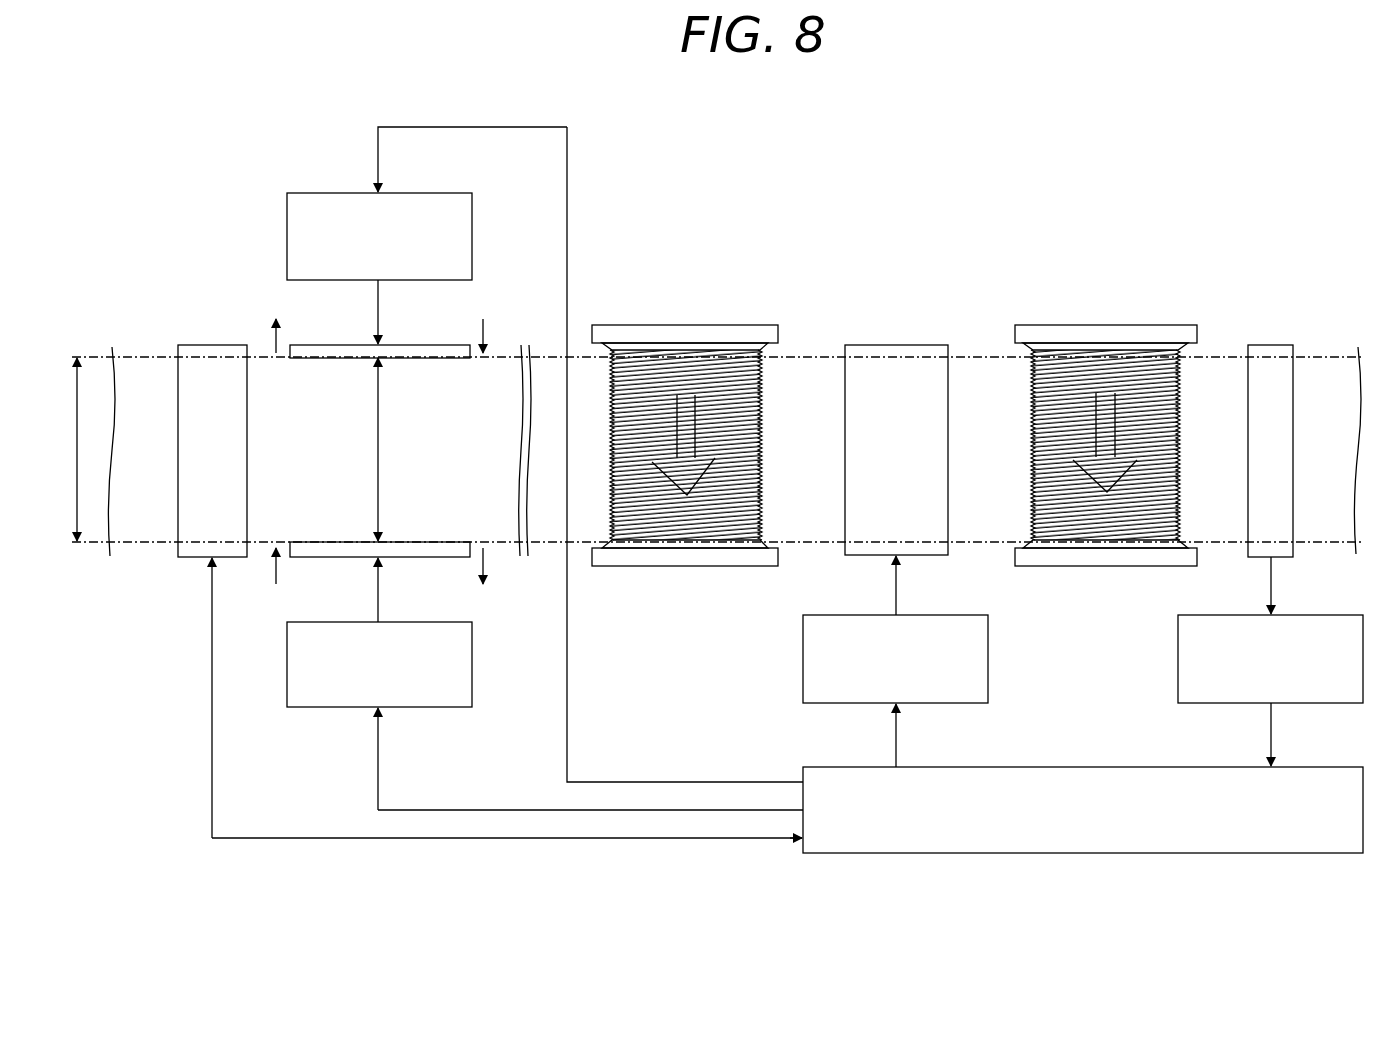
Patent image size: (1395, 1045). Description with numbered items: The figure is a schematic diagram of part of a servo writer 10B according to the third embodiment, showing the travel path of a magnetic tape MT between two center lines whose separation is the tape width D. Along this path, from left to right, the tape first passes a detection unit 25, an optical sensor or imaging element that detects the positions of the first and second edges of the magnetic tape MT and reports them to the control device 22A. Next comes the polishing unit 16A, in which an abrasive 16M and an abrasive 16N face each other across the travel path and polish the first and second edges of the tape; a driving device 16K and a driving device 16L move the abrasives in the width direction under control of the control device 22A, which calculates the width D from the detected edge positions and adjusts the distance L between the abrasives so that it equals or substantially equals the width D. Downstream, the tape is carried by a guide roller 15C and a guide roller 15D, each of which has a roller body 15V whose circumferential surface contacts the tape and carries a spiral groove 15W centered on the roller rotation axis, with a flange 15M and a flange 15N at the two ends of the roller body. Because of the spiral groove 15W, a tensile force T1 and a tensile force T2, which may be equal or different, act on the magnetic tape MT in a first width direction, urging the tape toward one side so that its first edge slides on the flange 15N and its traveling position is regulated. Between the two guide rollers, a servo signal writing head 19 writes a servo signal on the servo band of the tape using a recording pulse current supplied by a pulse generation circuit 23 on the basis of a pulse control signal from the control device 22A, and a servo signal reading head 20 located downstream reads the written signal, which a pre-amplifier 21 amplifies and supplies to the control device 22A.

The servo writer 10B is at (1262, 220).
The magnetic tape MT is at (156, 357).
The width of the magnetic tape D is at (63, 449).
The distance between the abrasives L is at (365, 449).
The detection unit 25 is at (213, 345).
The polishing unit 16A is at (304, 142).
The driving device 16K is at (447, 194).
The driving device 16L is at (447, 707).
The abrasive 16M is at (404, 345).
The abrasive 16N is at (408, 557).
The flange 15M is at (664, 335).
The flange 15N is at (665, 567).
The spiral groove 15W is at (762, 376).
The roller body 15V is at (768, 488).
The guide roller 15C is at (733, 320).
The guide roller 15D is at (1152, 320).
The tensile force T1 is at (765, 443).
The tensile force T2 is at (1032, 443).
The servo signal writing head 19 is at (912, 345).
The servo signal reading head 20 is at (1283, 345).
The pulse generation circuit 23 is at (962, 615).
The pre-amplifier 21 is at (1338, 615).
The control device 22A is at (1142, 767).